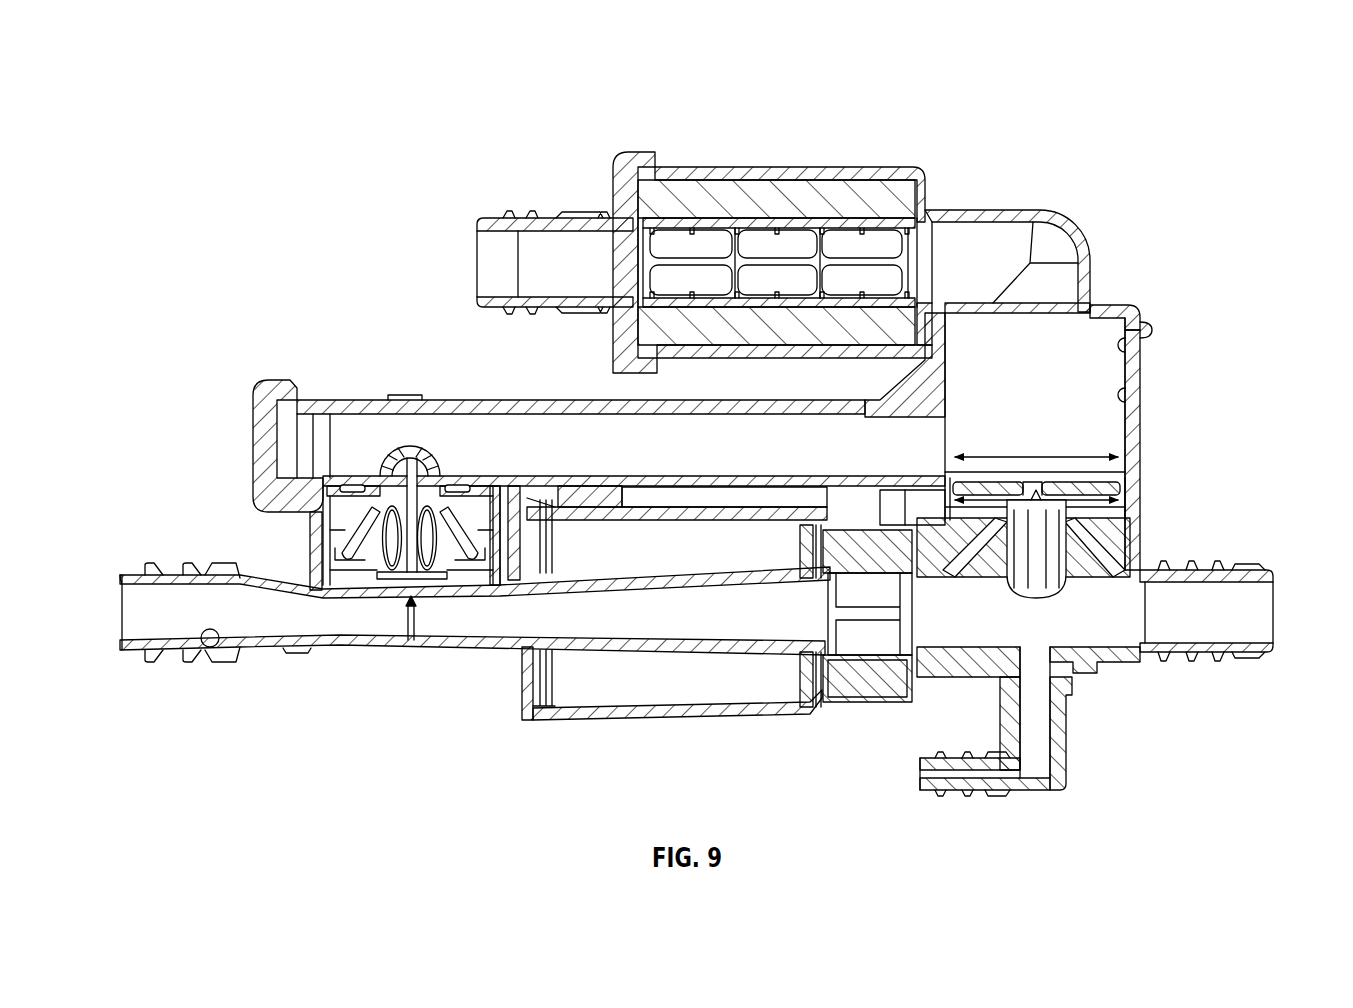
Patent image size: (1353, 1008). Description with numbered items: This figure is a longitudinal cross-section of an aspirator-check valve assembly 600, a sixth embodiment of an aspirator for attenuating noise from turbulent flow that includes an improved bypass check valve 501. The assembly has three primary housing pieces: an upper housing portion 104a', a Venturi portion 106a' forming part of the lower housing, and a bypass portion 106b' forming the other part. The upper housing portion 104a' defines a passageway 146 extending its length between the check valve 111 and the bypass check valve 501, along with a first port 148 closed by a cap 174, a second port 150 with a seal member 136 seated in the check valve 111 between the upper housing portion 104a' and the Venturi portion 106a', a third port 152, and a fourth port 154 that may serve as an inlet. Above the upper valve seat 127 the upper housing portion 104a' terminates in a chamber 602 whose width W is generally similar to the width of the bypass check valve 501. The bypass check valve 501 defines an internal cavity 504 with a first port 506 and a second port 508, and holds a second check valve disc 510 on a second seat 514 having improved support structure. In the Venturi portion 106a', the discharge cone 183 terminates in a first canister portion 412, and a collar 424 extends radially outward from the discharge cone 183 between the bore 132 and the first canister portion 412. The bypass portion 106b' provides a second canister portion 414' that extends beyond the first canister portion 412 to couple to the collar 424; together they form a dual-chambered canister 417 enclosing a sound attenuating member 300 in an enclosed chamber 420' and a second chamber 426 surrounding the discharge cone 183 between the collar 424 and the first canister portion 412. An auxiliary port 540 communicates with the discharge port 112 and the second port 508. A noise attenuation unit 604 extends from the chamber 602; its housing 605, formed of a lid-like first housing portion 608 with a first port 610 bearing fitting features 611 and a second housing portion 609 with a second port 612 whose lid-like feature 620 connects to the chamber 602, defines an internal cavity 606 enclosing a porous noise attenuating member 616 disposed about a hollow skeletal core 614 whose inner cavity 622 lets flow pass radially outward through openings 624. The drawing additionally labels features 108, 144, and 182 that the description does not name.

The aspirator-check valve assembly 600 is at (338, 148).
The noise attenuation unit 604 is at (950, 175).
The housing 605 is at (772, 172).
The second housing portion 609 is at (715, 172).
The first port 610 is at (486, 240).
The fitting features 611 is at (530, 216).
The first housing portion 608 is at (610, 202).
The noise attenuating member 616 is at (828, 192).
The core 614 is at (880, 216).
The inner cavity 622 is at (655, 262).
The openings 624 is at (838, 278).
The second port 612 is at (1083, 283).
The lid-like feature 620 is at (1140, 307).
The fourth port 154 is at (1150, 342).
The chamber 602 is at (1140, 396).
The internal cavity 606 is at (680, 358).
The passageway 146 is at (578, 432).
The upper housing portion 104a' is at (439, 384).
The cap 174 is at (252, 427).
The first port 148 is at (285, 400).
The check valve 111 is at (308, 527).
The second port 150 is at (405, 462).
The seal member 136 is at (360, 476).
The first barbed port 108 is at (130, 632).
The Venturi portion 106a' is at (472, 669).
The seal ring 182 is at (212, 650).
The flow passage 144 is at (365, 625).
The discharge cone 183 is at (466, 625).
The bore 132 is at (412, 640).
The discharge port 112 is at (1260, 640).
The bypass check valve 501 is at (1182, 481).
The third port 152 is at (995, 481).
The first port 506 is at (1010, 481).
The width W is at (1015, 572).
The upper valve seat 127 is at (945, 492).
The second check valve disc 510 is at (1125, 478).
The internal cavity 504 is at (1112, 526).
The second seat 514 is at (955, 552).
The second port 508 is at (1043, 592).
The collar 424 is at (522, 720).
The second chamber 426 is at (602, 706).
The second canister portion 414' is at (677, 733).
The canister 417 is at (732, 714).
The first canister portion 412 is at (800, 692).
The enclosed chamber 420' is at (843, 642).
The sound attenuating member 300 is at (880, 700).
The bypass portion 106b' is at (1039, 680).
The auxiliary port 540 is at (950, 790).